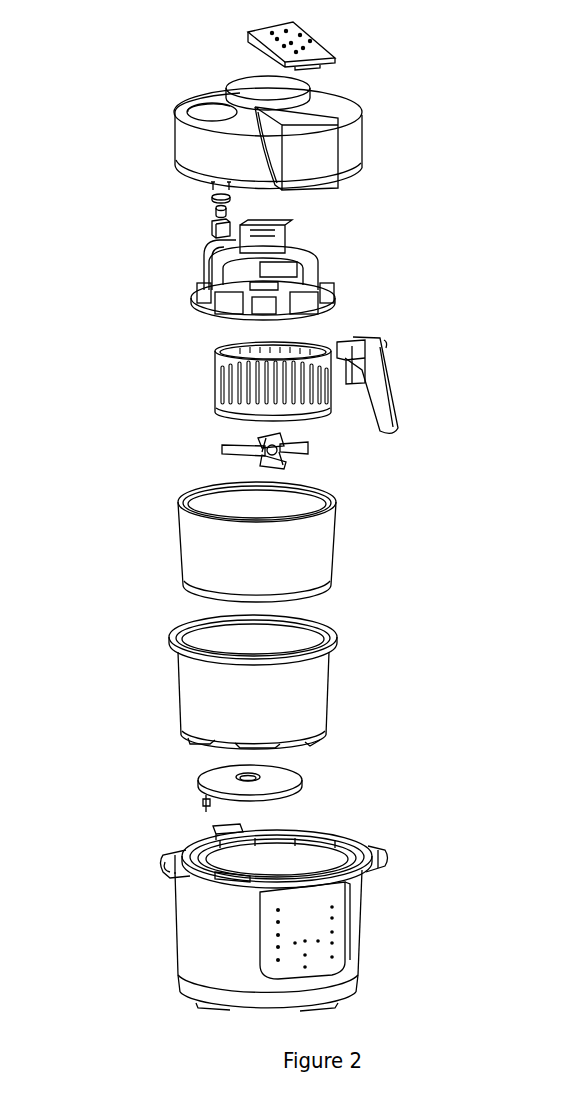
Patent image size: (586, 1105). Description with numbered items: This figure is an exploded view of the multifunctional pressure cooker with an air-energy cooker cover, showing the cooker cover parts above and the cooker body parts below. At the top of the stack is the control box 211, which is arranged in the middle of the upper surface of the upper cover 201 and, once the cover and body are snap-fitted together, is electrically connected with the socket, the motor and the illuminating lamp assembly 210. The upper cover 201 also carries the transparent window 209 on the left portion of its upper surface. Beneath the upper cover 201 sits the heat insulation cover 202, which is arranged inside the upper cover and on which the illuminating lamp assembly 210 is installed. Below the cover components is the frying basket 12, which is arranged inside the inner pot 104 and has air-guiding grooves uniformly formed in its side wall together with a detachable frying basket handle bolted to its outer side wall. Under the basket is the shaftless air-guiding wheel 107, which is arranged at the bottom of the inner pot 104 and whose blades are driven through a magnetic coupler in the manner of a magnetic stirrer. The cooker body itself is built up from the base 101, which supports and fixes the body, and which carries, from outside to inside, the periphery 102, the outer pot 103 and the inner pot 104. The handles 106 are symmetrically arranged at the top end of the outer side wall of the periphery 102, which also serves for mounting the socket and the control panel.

The frying basket 12 is at (367, 352).
The base 101 is at (222, 995).
The periphery 102 is at (360, 917).
The outer pot 103 is at (330, 680).
The inner pot 104 is at (343, 520).
The handle 106 is at (178, 862).
The shaftless air-guiding wheel 107 is at (240, 452).
The upper cover 201 is at (269, 442).
The heat insulation cover 202 is at (307, 255).
The transparent window 209 is at (193, 110).
The illuminating lamp assembly 210 is at (208, 202).
The control box 211 is at (322, 33).